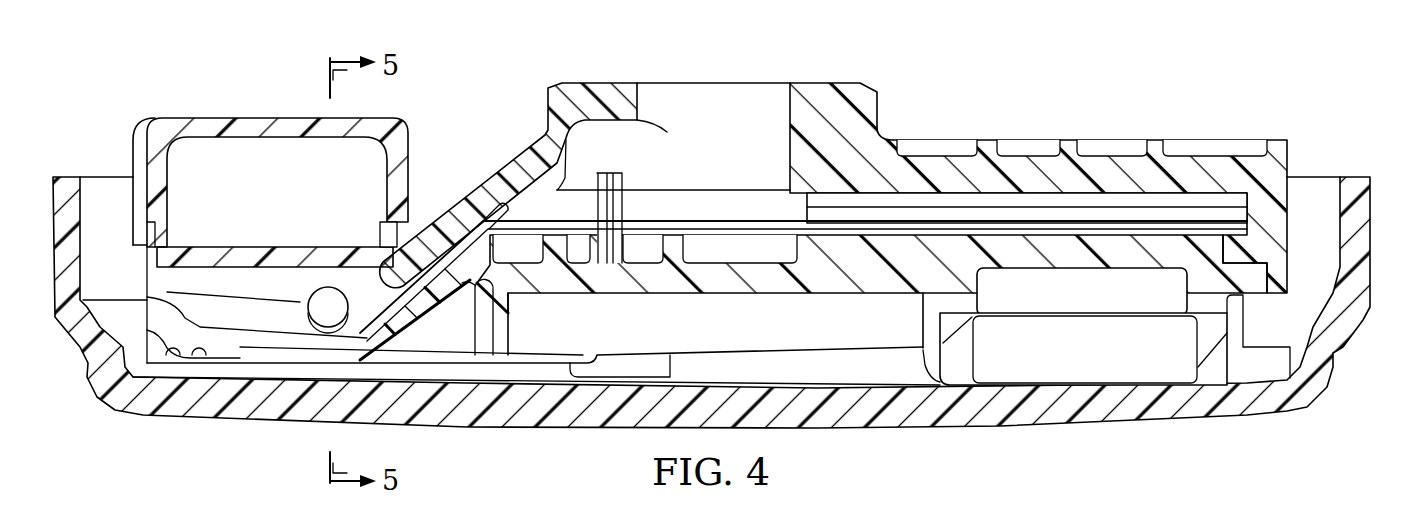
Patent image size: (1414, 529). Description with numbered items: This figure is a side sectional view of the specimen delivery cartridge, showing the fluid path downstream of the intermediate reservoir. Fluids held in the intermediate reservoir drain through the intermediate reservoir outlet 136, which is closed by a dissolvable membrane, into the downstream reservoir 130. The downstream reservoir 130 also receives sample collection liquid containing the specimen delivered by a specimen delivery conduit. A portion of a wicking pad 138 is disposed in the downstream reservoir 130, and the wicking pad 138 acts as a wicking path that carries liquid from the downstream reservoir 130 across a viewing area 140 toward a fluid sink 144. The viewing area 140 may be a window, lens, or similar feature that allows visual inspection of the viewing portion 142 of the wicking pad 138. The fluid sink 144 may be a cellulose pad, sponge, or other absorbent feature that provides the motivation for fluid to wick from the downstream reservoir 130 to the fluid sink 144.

The downstream reservoir 130 is at (228, 285).
The intermediate reservoir outlet 136 is at (327, 300).
The wicking pad 138 is at (430, 277).
The viewing area 140 is at (757, 83).
The viewing portion 142 is at (725, 210).
The fluid sink 144 is at (1120, 200).